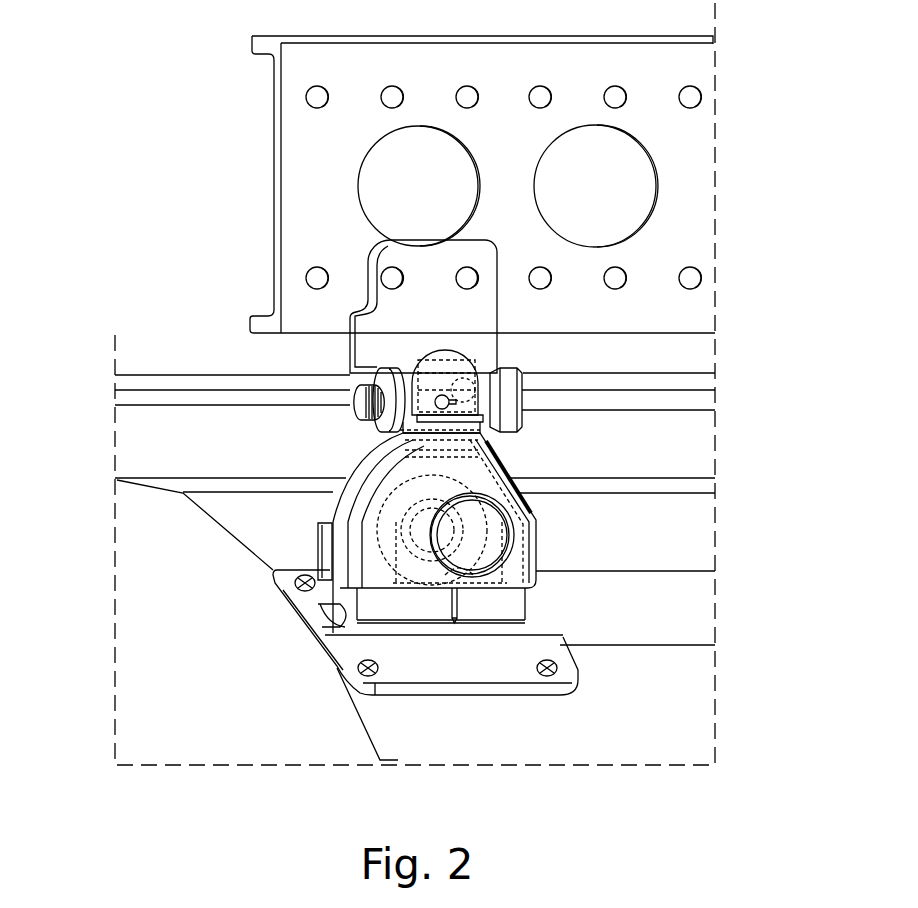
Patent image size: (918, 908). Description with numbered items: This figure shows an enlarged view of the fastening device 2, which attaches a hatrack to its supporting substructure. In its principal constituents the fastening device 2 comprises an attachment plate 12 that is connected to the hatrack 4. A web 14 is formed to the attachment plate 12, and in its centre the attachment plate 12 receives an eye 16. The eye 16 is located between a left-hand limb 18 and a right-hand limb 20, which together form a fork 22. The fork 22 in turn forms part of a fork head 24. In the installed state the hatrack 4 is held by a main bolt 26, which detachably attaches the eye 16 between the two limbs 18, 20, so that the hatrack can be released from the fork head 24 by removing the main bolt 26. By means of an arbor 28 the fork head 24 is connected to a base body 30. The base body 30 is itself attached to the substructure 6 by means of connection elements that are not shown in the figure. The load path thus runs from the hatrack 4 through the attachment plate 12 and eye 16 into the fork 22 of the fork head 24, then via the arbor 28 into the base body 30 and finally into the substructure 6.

The fastening device 2 is at (598, 584).
The hatrack 4 is at (240, 693).
The substructure 6 is at (345, 157).
The attachment plate 12 is at (477, 663).
The web 14 is at (337, 612).
The eye 16 is at (408, 487).
The left-hand limb 18 is at (367, 452).
The right-hand limb 20 is at (485, 437).
The fork 22 is at (560, 542).
The fork head 24 is at (577, 417).
The main bolt 26 is at (463, 522).
The arbor 28 is at (532, 376).
The base body 30 is at (377, 345).